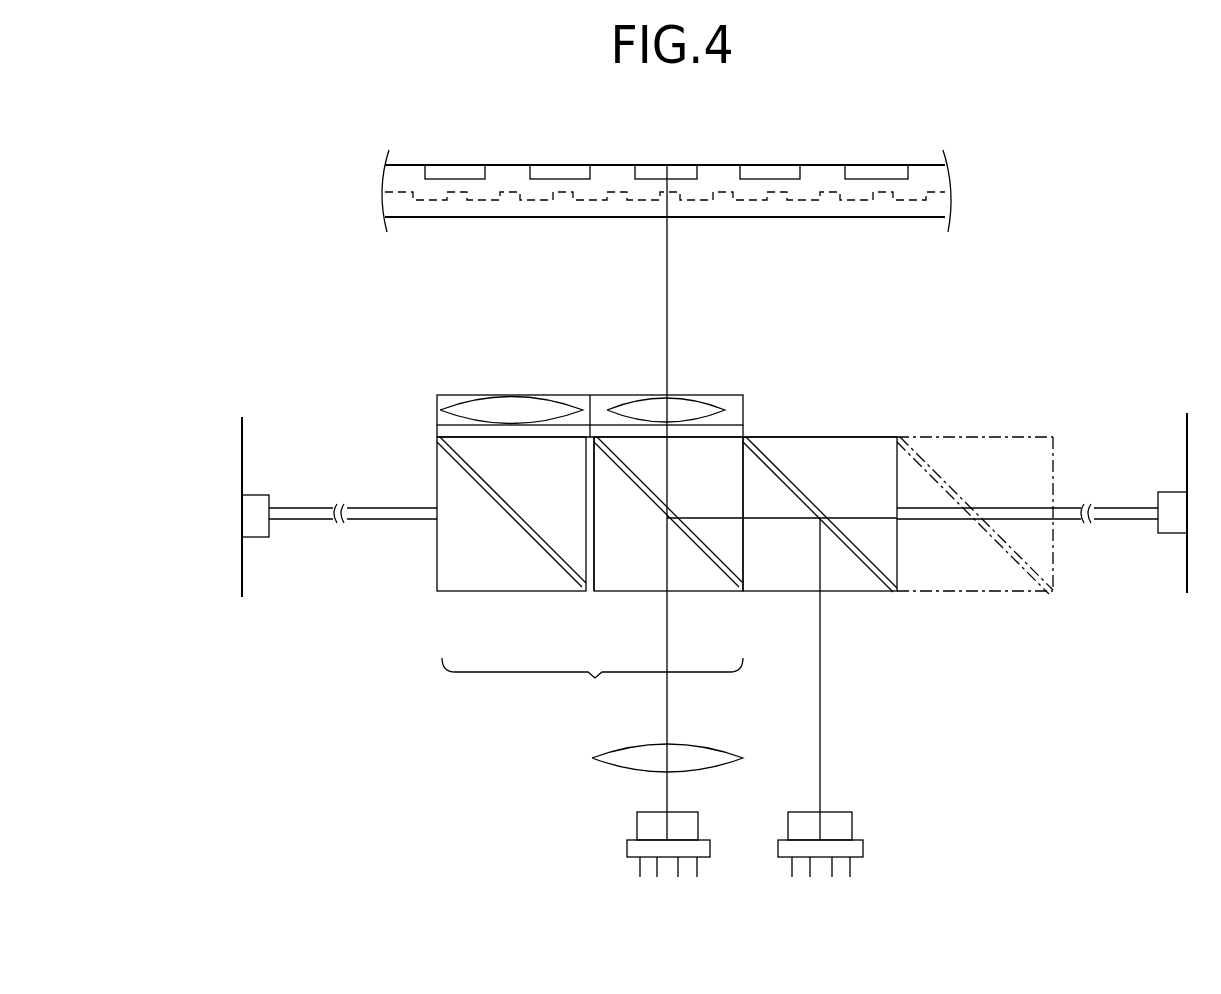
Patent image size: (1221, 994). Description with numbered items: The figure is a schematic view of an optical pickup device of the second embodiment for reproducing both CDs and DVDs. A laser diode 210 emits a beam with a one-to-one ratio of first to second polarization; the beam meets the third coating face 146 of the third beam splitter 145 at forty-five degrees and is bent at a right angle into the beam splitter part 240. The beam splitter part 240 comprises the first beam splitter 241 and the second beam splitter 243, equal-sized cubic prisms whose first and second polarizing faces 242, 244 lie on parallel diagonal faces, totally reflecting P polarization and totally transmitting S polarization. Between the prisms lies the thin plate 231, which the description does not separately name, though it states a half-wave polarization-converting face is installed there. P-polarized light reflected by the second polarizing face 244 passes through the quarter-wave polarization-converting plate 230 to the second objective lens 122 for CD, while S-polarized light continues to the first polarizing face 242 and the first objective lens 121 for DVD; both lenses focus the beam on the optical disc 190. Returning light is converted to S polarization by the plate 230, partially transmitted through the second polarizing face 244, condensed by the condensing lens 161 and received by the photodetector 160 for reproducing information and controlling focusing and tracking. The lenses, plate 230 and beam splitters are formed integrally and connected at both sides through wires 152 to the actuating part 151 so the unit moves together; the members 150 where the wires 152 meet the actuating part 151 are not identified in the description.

The optical disc 190 is at (935, 206).
The first objective lens 121 is at (490, 401).
The second objective lens 122 is at (688, 398).
The polarization-converting plate 230 is at (738, 434).
The first beam splitter 241 is at (492, 584).
The first polarizing face 242 is at (521, 519).
The partition plate 231 is at (597, 545).
The second beam splitter 243 is at (634, 584).
The second polarizing face 244 is at (658, 495).
The beam splitter part 240 is at (592, 684).
The third beam splitter 145 is at (781, 588).
The third coating face 146 is at (828, 518).
The optical fiber connector 150 is at (268, 608).
The actuating part 151 is at (230, 438).
The wires 152 is at (302, 522).
The condensing lens 161 is at (592, 758).
The photodetector 160 is at (627, 847).
The laser diode 210 is at (863, 850).